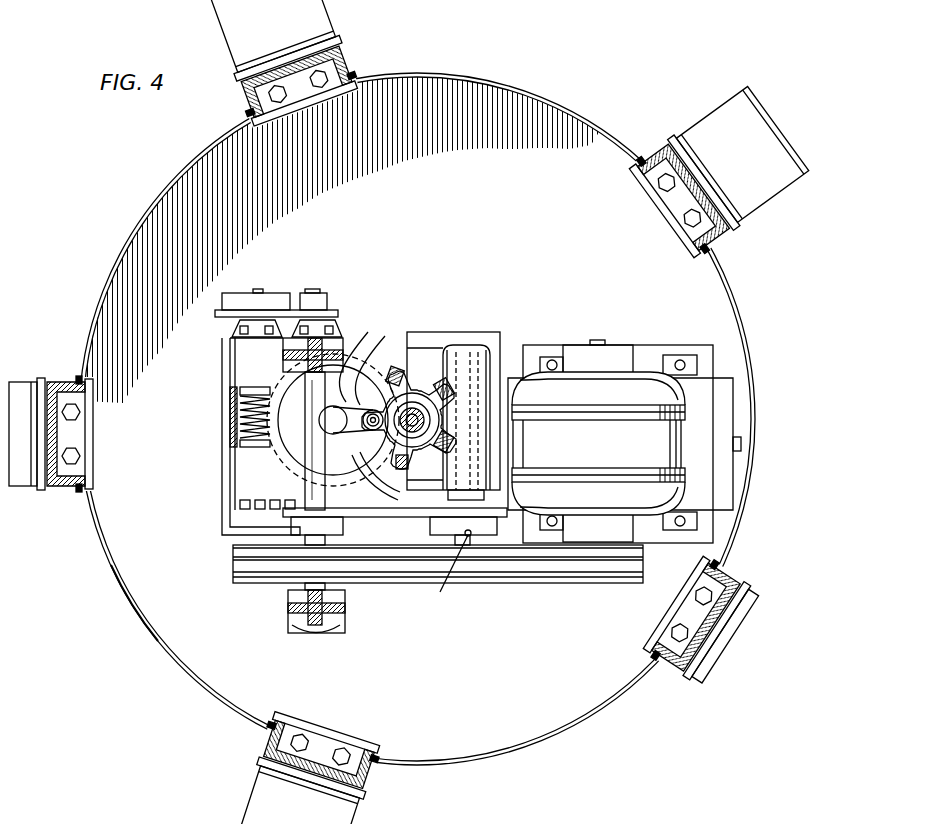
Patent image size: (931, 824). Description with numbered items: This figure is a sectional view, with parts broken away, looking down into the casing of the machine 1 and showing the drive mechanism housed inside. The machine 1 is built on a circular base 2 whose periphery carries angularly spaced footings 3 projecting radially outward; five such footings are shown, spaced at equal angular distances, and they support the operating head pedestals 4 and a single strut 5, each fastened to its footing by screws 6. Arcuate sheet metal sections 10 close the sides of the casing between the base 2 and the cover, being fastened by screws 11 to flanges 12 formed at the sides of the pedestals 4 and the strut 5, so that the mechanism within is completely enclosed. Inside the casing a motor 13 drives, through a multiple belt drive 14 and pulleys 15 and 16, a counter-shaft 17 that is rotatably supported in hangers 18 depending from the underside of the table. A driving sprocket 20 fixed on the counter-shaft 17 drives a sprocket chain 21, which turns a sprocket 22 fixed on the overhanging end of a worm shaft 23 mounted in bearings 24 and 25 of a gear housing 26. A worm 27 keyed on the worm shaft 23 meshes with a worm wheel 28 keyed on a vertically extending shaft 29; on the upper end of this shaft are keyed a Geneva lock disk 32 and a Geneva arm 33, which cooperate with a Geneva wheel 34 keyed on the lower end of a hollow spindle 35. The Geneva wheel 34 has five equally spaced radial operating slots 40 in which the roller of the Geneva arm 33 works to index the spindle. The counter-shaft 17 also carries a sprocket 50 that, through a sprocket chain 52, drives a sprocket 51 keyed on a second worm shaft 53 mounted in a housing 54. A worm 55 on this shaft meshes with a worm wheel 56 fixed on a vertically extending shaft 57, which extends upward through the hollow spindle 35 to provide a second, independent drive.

The machine 1 is at (134, 159).
The circular base 2 is at (130, 616).
The footings 3 is at (370, 780).
The operating head pedestals 4 is at (262, 770).
The strut 5 is at (740, 620).
The screws 6 is at (318, 750).
The arcuate sheet metal sections 10 is at (600, 728).
The screws 11 is at (578, 742).
The flanges 12 is at (384, 762).
The motor 13 is at (624, 345).
The multiple belt drive 14 is at (508, 572).
The pulley 15 is at (572, 582).
The pulley 16 is at (262, 585).
The counter-shaft 17 is at (326, 496).
The hangers 18 is at (285, 620).
The driving sprocket 20 is at (330, 298).
The sprocket chain 21 is at (296, 310).
The sprocket 22 is at (226, 294).
The worm shaft 23 is at (238, 390).
The bearing 24 is at (232, 330).
The bearing 25 is at (238, 504).
The gear housing 26 is at (230, 410).
The worm 27 is at (240, 420).
The worm wheel 28 is at (240, 446).
The vertically extending shaft 29 is at (360, 360).
The Geneva lock disk 32 is at (366, 380).
The Geneva arm 33 is at (362, 472).
The Geneva wheel 34 is at (384, 490).
The hollow spindle 35 is at (410, 392).
The operating slots 40 is at (444, 380).
The sprocket 50 is at (356, 517).
The sprocket 51 is at (451, 532).
The sprocket chain 52 is at (400, 517).
The worm shaft 53 is at (455, 569).
The housing 54 is at (476, 398).
The worm 55 is at (480, 410).
The worm wheel 56 is at (462, 348).
The vertically extending shaft 57 is at (414, 470).